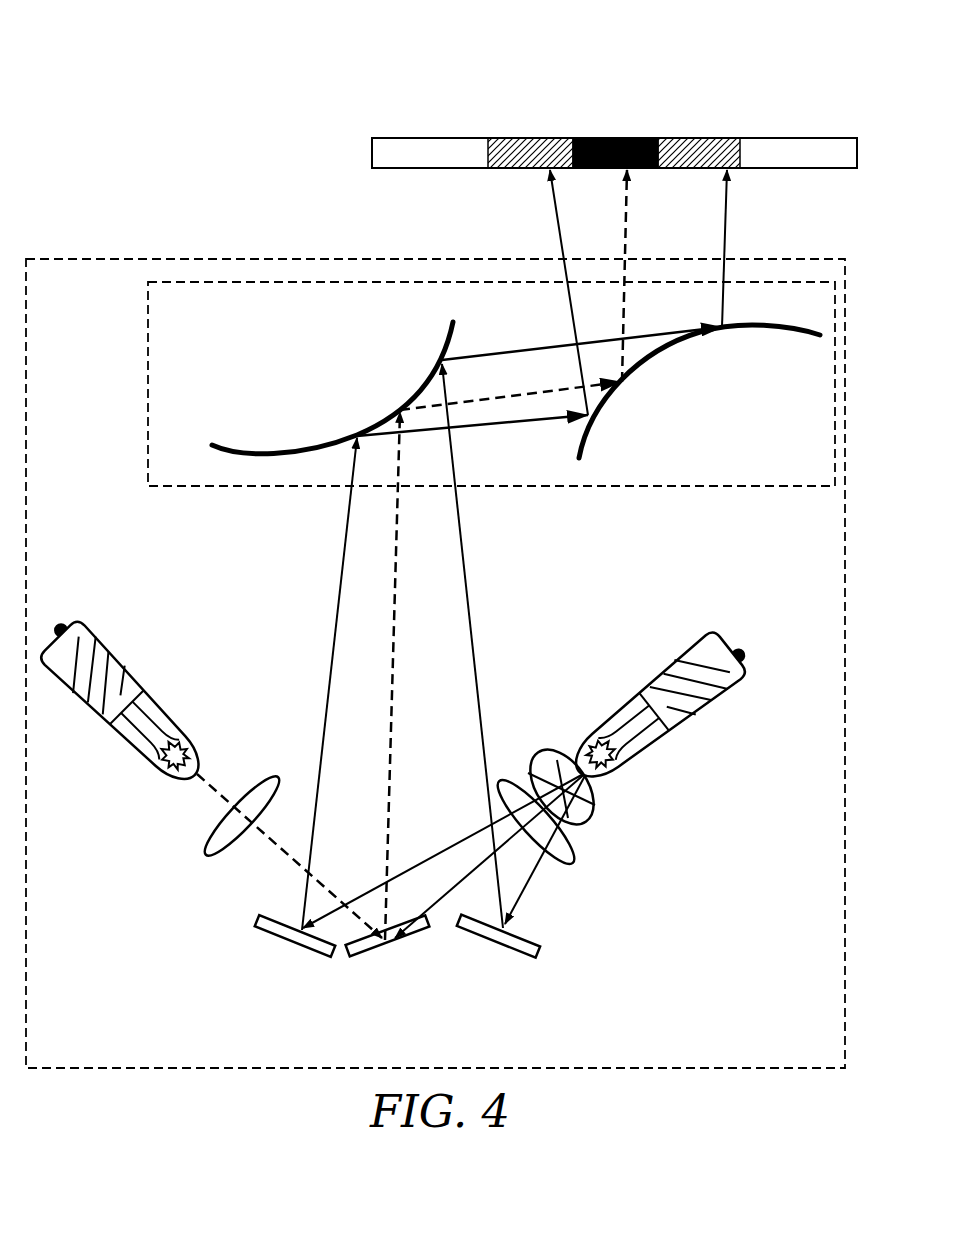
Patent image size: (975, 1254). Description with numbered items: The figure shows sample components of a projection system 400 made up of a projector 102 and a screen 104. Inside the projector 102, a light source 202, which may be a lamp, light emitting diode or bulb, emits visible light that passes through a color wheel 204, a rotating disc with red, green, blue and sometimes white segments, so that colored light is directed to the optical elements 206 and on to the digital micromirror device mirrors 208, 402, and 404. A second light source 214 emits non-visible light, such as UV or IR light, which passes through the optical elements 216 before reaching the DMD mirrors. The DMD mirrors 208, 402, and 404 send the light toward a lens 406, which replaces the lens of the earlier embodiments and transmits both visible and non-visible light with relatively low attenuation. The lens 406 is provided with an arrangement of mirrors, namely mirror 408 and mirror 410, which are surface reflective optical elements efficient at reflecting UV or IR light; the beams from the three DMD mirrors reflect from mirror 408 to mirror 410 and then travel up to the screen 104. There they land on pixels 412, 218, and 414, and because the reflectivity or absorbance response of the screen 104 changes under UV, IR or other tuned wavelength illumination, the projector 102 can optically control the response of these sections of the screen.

The projection system 400 is at (178, 92).
The projector 102 is at (835, 1061).
The screen 104 is at (415, 169).
The pixel 412 is at (513, 137).
The pixel 218 is at (607, 137).
The pixel 414 is at (697, 137).
The lens 406 is at (200, 492).
The mirror 408 is at (253, 449).
The mirror 410 is at (667, 357).
The light source 202 is at (683, 648).
The light source 214 is at (133, 758).
The color wheel 204 is at (538, 753).
The optical elements 206 is at (573, 856).
The optical elements 216 is at (268, 772).
The DMD mirror 404 is at (297, 953).
The DMD mirror 208 is at (400, 946).
The DMD mirror 402 is at (508, 953).